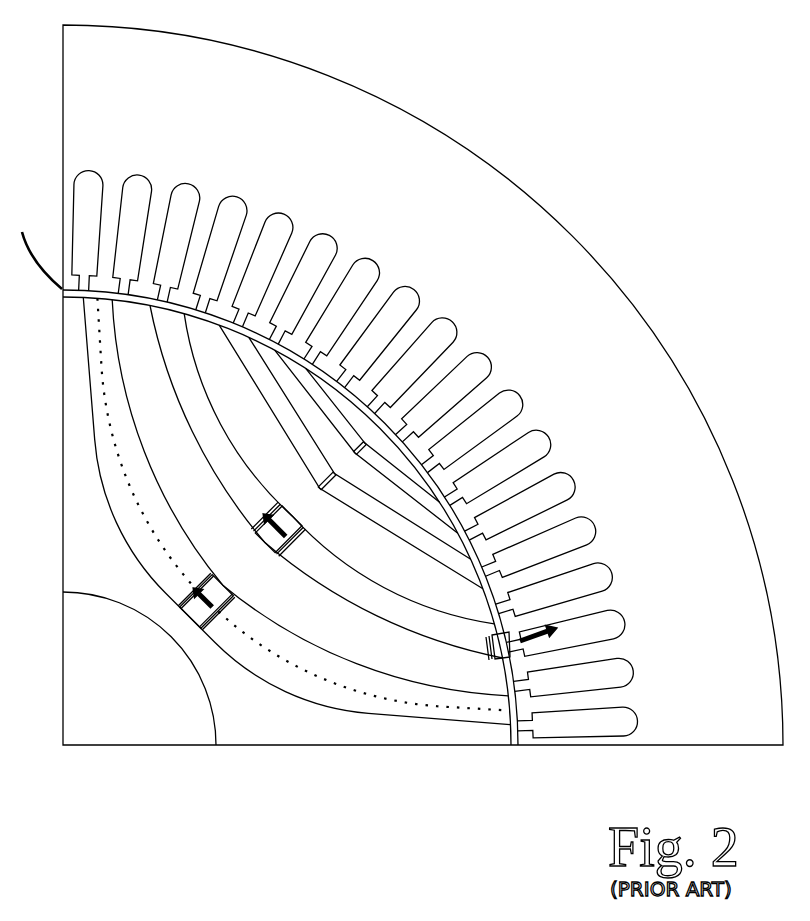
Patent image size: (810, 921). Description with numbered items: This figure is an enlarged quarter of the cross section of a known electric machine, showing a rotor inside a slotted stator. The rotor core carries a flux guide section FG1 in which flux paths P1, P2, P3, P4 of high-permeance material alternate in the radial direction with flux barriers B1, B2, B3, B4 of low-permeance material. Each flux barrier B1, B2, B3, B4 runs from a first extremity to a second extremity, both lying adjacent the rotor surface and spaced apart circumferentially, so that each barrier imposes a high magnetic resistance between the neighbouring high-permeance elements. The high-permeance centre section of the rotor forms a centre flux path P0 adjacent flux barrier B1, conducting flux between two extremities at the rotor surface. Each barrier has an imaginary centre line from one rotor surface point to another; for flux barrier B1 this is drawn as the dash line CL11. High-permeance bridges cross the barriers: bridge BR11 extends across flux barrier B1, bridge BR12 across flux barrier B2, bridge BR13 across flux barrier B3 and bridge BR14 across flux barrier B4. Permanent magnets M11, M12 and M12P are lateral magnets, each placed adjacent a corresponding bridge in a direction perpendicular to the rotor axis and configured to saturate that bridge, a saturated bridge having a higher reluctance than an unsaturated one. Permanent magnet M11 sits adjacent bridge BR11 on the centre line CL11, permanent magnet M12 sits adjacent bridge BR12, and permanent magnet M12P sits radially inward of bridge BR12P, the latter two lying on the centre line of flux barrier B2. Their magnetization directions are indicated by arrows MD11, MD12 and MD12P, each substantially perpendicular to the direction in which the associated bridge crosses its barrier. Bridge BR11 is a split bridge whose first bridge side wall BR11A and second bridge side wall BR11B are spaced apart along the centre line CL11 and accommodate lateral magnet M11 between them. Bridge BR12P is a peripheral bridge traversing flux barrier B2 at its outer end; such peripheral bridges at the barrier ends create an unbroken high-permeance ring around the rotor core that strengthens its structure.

The centre flux path P0 is at (37, 250).
The flux barrier B1 is at (97, 290).
The flux barrier B2 is at (170, 318).
The flux barrier B3 is at (236, 340).
The flux barrier B4 is at (292, 372).
The flux path P1 is at (132, 308).
The flux path P2 is at (207, 318).
The flux path P3 is at (265, 356).
The flux path P4 is at (332, 392).
The flux guide section FG1 is at (388, 435).
The imaginary centre line CL11 is at (330, 677).
The permanent magnet M11 is at (198, 630).
The magnetization direction MD11 is at (225, 559).
The bridge BR11 is at (181, 616).
The first bridge side wall BR11A is at (178, 610).
The second bridge side wall BR11B is at (234, 606).
The permanent magnet M12 is at (279, 555).
The magnetization direction MD12 is at (290, 486).
The bridge BR12 is at (261, 552).
The bridge BR13 is at (321, 493).
The bridge BR14 is at (356, 457).
The permanent magnet M12P is at (493, 641).
The magnetization direction MD12P is at (499, 653).
The peripheral bridge BR12P is at (497, 631).